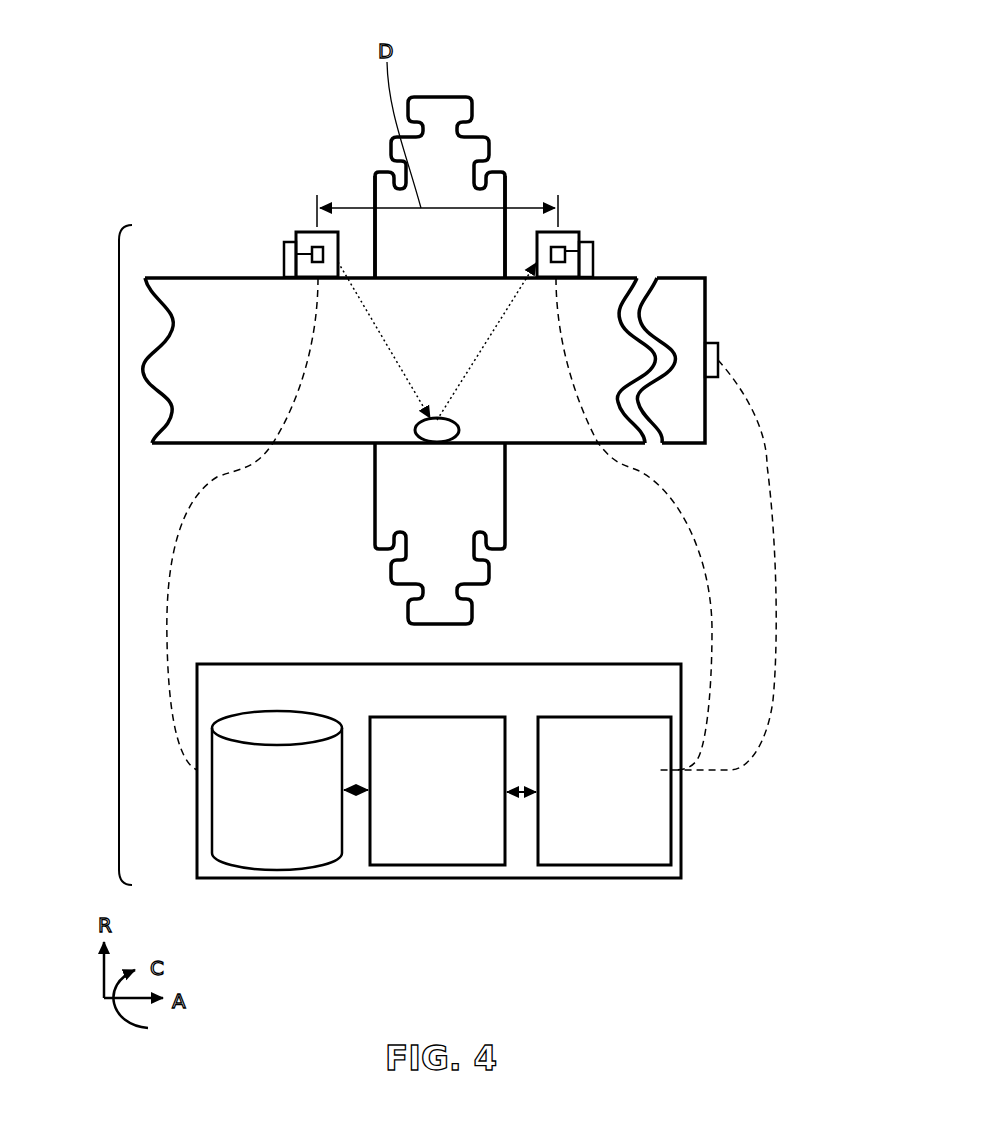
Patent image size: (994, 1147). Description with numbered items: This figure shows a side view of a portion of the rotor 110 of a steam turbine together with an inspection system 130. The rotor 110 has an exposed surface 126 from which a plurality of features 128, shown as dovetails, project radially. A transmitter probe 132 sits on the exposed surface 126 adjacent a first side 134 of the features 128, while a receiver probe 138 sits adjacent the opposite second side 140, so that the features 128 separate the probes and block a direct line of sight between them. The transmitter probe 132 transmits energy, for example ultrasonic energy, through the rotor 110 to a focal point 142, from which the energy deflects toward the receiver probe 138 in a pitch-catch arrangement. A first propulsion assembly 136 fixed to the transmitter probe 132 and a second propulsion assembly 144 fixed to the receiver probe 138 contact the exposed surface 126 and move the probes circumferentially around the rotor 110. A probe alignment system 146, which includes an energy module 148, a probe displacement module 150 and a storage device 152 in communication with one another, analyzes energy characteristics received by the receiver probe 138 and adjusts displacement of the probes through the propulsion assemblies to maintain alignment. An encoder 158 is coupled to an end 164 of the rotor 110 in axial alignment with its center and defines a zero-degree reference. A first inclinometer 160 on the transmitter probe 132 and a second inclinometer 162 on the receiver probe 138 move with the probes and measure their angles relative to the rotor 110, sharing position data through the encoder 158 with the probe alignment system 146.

The rotor 110 is at (180, 445).
The exposed surface 126 is at (313, 450).
The plurality of features 128 is at (453, 88).
The inspection system 130 is at (119, 560).
The transmitter probe 132 is at (295, 232).
The first side 134 is at (371, 182).
The first propulsion assembly 136 is at (284, 270).
The receiver probe 138 is at (580, 232).
The second side 140 is at (509, 182).
The focal point 142 is at (465, 431).
The second propulsion assembly 144 is at (594, 269).
The probe alignment system 146 is at (439, 771).
The energy module 148 is at (437, 791).
The probe displacement module 150 is at (604, 791).
The storage device 152 is at (277, 790).
The encoder 158 is at (712, 378).
The first inclinometer 160 is at (284, 245).
The second inclinometer 162 is at (594, 246).
The end 164 is at (710, 308).